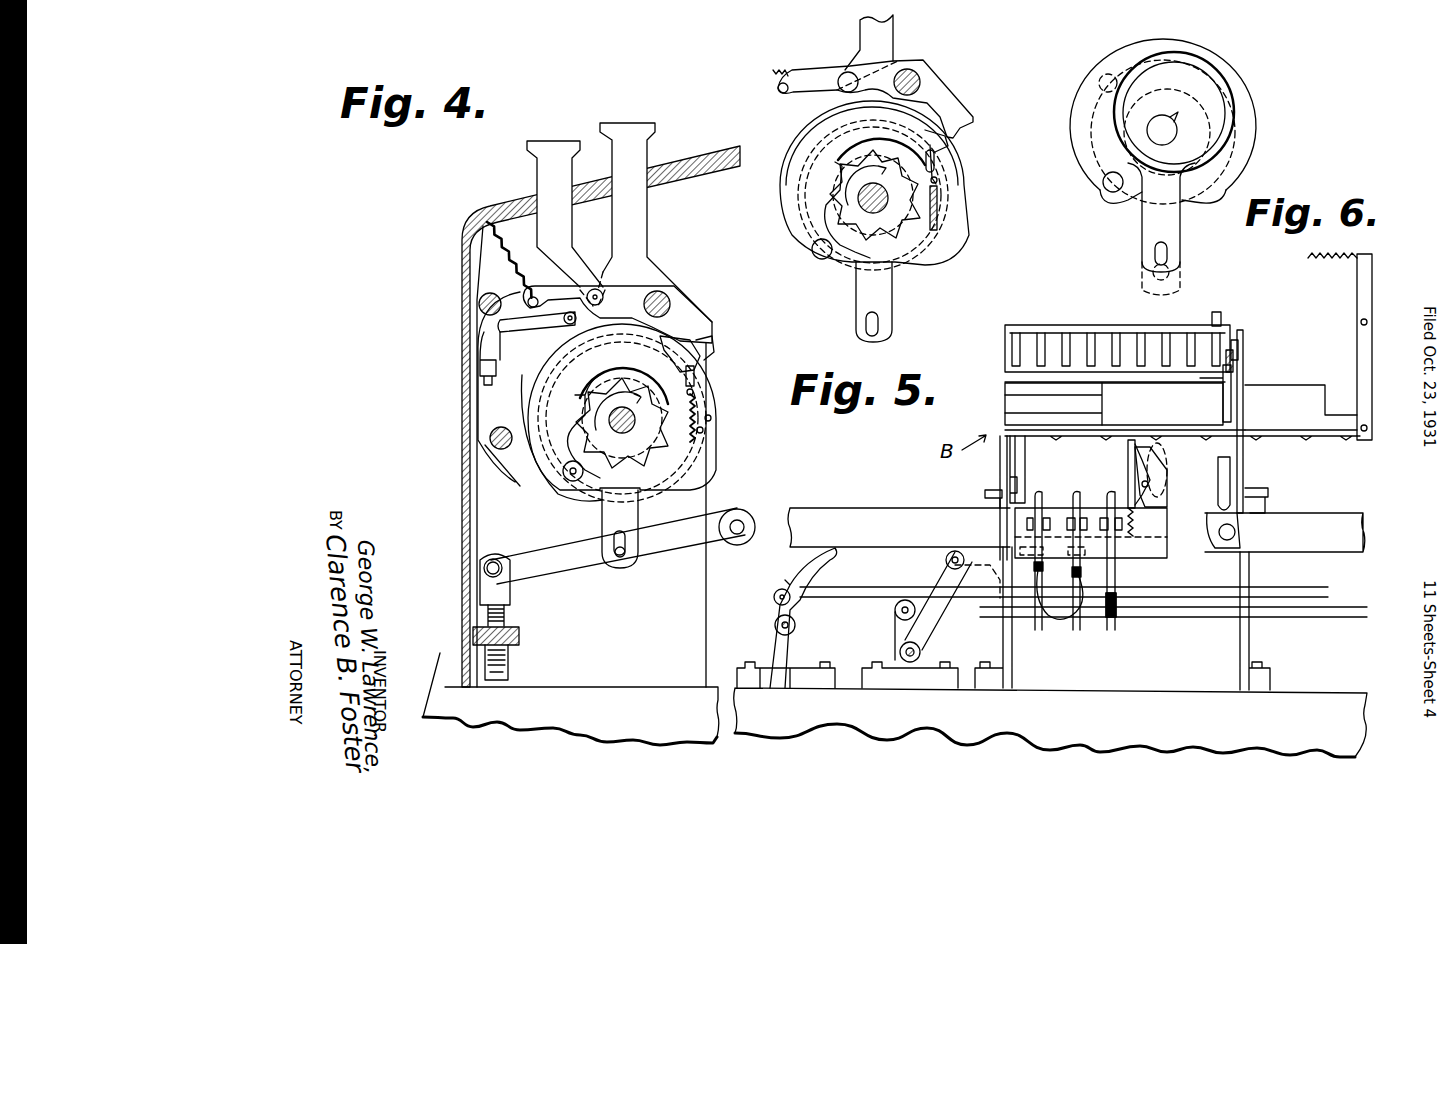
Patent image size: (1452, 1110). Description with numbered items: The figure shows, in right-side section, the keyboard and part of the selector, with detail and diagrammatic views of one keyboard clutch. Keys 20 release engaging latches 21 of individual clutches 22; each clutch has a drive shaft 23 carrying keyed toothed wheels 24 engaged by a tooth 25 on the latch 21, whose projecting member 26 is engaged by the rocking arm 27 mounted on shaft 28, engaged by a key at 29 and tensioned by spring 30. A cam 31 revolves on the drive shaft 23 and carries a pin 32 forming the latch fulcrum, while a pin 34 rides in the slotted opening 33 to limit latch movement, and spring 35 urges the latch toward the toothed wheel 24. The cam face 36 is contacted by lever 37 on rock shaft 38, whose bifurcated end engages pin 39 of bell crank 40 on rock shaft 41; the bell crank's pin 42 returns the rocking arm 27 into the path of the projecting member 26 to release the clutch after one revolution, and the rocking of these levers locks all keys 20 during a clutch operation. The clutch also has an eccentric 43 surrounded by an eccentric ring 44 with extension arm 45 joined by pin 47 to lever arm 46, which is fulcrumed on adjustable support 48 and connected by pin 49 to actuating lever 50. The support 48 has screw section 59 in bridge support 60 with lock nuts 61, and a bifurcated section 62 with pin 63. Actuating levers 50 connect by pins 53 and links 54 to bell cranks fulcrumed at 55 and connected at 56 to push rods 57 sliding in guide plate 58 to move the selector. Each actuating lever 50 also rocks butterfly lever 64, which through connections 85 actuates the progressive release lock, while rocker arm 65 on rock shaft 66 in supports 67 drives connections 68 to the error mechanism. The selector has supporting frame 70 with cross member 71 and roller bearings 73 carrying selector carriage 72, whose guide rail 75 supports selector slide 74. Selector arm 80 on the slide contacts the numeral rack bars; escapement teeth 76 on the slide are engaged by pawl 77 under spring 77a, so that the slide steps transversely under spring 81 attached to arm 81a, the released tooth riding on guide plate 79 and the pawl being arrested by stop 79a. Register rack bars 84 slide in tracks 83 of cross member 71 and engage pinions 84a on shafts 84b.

In FIG. 4, the keys 20 is at (523, 170).
In FIG. 4, the engaging latch 21 is at (690, 388).
In FIG. 5, the engaging latch 21 is at (828, 132).
In FIG. 4, the clutch 22 is at (729, 432).
In FIG. 4, the drive shaft 23 is at (638, 402).
In FIG. 5, the drive shaft 23 is at (908, 182).
In FIG. 4, the toothed wheel 24 is at (640, 452).
In FIG. 5, the toothed wheel 24 is at (918, 230).
In FIG. 4, the tooth 25 is at (564, 390).
In FIG. 5, the tooth 25 is at (835, 162).
In FIG. 4, the projecting member 26 is at (710, 346).
In FIG. 5, the projecting member 26 is at (950, 143).
In FIG. 4, the rocking arm 27 is at (700, 325).
In FIG. 5, the rocking arm 27 is at (958, 98).
In FIG. 4, the shaft 28 is at (668, 300).
In FIG. 5, the shaft 28 is at (916, 80).
In FIG. 4, the key engagement point 29 is at (598, 305).
In FIG. 4, the spring 30 is at (512, 272).
In FIG. 4, the cam 31 is at (700, 452).
In FIG. 5, the cam 31 is at (955, 214).
In FIG. 6, the cam 31 is at (1246, 136).
In FIG. 4, the pin 32 is at (566, 464).
In FIG. 5, the pin 32 is at (816, 258).
In FIG. 4, the slotted opening 33 is at (660, 350).
In FIG. 5, the slotted opening 33 is at (942, 174).
In FIG. 4, the pin 34 is at (700, 364).
In FIG. 5, the pin 34 is at (940, 156).
In FIG. 4, the spring 35 is at (704, 410).
In FIG. 5, the spring 35 is at (942, 196).
In FIG. 4, the cam face 36 is at (606, 492).
In FIG. 5, the cam face 36 is at (896, 262).
In FIG. 4, the lever 37 is at (508, 486).
In FIG. 4, the rock shaft 38 is at (499, 428).
In FIG. 4, the pin 39 is at (497, 360).
In FIG. 4, the bell crank 40 is at (512, 328).
In FIG. 4, the rock shaft 41 is at (496, 306).
In FIG. 4, the pin 42 is at (568, 324).
In FIG. 6, the eccentric 43 is at (1195, 86).
In FIG. 6, the eccentric ring 44 is at (1222, 102).
In FIG. 4, the extension arm 45 is at (622, 560).
In FIG. 5, the extension arm 45 is at (880, 326).
In FIG. 6, the extension arm 45 is at (1146, 240).
In FIG. 4, the lever arm 46 is at (552, 574).
In FIG. 4, the pin 47 is at (616, 560).
In FIG. 4, the adjustable support 48 is at (498, 570).
In FIG. 4, the pin 49 is at (742, 508).
In FIG. 4, the actuating lever 50 is at (848, 514).
In FIG. 4, the pin 53 is at (1234, 530).
In FIG. 4, the link 54 is at (1245, 462).
In FIG. 4, the fulcrum 55 is at (1240, 378).
In FIG. 4, the connection 56 is at (1240, 356).
In FIG. 4, the push rod 57 is at (1240, 344).
In FIG. 4, the guide plate 58 is at (1022, 352).
In FIG. 4, the screw section 59 is at (508, 622).
In FIG. 4, the bridge support 60 is at (520, 637).
In FIG. 4, the lock nut 61 is at (512, 652).
In FIG. 4, the bifurcated section 62 is at (503, 552).
In FIG. 4, the pin 63 is at (500, 528).
In FIG. 4, the butterfly lever 64 is at (800, 565).
In FIG. 4, the rocker arm 65 is at (940, 572).
In FIG. 4, the rock shaft 66 is at (895, 650).
In FIG. 4, the support 67 is at (930, 662).
In FIG. 4, the connections 68 is at (1180, 610).
In FIG. 4, the supporting frame 70 is at (1012, 656).
In FIG. 4, the cross member 71 is at (1160, 548).
In FIG. 4, the selector carriage 72 is at (1022, 456).
In FIG. 4, the roller bearings 73 is at (985, 492).
In FIG. 4, the selector slide 74 is at (1295, 385).
In FIG. 4, the guide rail 75 is at (1010, 406).
In FIG. 4, the escapement teeth 76 is at (1300, 450).
In FIG. 4, the pawl 77 is at (1160, 470).
In FIG. 4, the spring 77a is at (1145, 520).
In FIG. 4, the guide plate 79 is at (1128, 444).
In FIG. 4, the stop 79a is at (1135, 478).
In FIG. 4, the selector arm 80 is at (1224, 316).
In FIG. 4, the spring 81 is at (1314, 265).
In FIG. 4, the arm 81a is at (1362, 360).
In FIG. 4, the tracks 83 is at (1075, 505).
In FIG. 4, the register rack bar 84 is at (1110, 497).
In FIG. 4, the pinion 84a is at (1058, 617).
In FIG. 4, the shaft 84b is at (992, 590).
In FIG. 4, the connections 85 is at (866, 586).